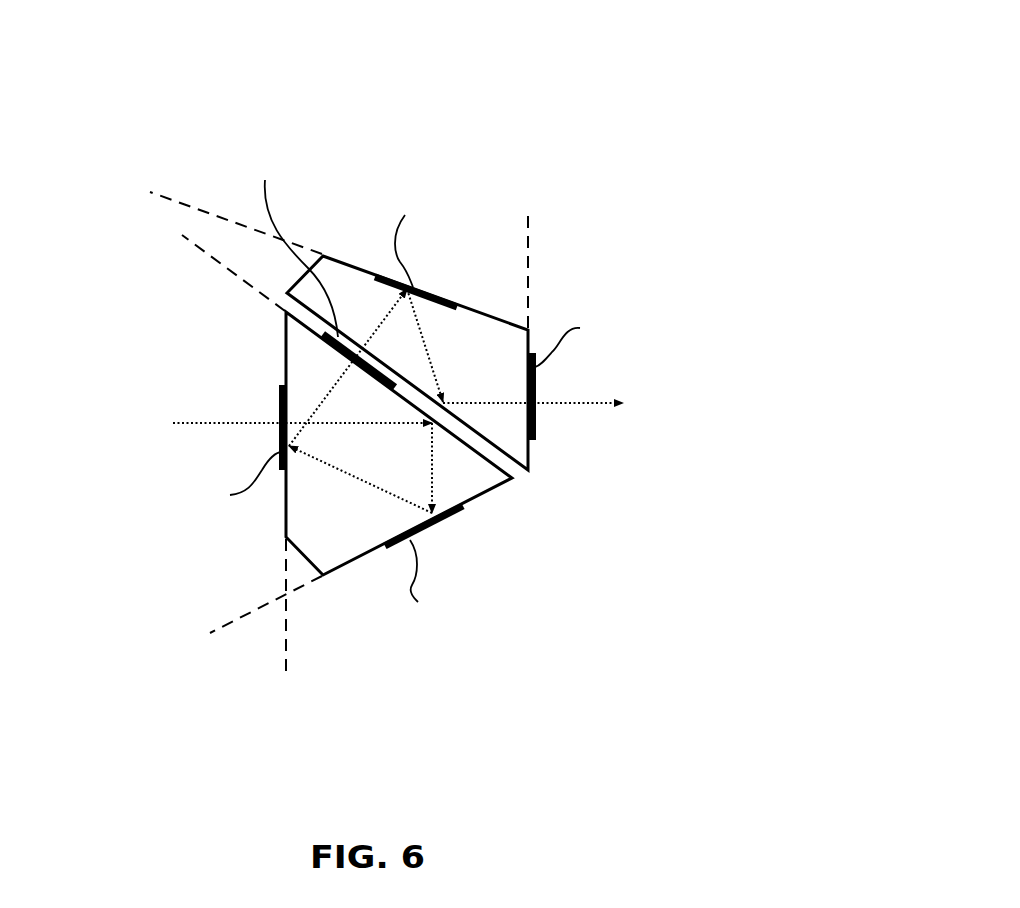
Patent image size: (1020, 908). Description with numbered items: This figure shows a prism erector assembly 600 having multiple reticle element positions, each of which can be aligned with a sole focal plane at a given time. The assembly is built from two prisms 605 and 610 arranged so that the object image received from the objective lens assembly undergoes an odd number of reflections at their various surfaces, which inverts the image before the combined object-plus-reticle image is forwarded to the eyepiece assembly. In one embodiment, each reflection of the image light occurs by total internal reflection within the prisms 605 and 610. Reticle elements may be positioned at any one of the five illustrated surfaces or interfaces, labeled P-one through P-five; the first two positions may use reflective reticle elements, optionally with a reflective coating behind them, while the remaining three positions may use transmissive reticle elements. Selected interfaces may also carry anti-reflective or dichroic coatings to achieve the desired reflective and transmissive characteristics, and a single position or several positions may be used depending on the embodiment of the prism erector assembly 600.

The prism erector assembly 600 is at (576, 87).
The prism 605 is at (345, 534).
The prism 610 is at (505, 363).